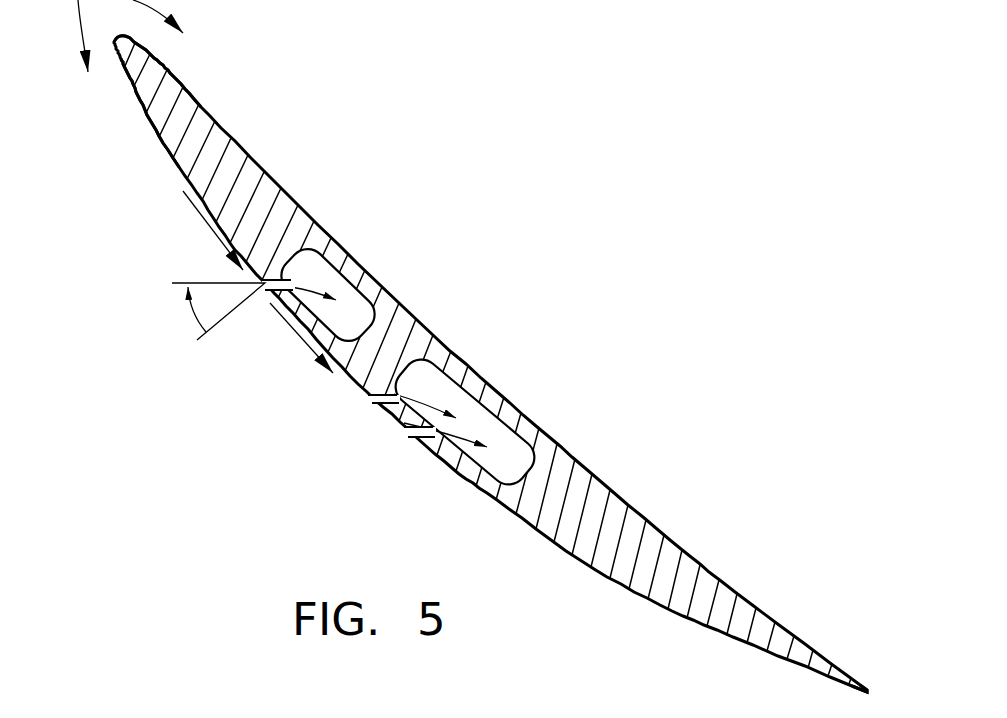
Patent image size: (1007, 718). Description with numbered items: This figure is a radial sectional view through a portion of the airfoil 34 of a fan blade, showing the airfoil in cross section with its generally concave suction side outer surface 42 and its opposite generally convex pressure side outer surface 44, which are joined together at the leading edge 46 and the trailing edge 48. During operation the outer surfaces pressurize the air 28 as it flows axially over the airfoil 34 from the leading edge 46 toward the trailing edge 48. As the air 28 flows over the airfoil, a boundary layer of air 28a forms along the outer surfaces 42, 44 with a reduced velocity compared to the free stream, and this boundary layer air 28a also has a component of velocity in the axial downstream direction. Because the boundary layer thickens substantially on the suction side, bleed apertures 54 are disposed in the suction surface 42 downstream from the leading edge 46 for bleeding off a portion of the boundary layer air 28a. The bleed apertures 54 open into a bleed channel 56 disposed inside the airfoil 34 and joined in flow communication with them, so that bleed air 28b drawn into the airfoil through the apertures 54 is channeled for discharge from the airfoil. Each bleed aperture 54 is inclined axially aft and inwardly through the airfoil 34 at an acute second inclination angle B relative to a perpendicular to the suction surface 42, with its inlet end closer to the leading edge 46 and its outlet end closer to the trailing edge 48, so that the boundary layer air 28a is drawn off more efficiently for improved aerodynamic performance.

The air 28 is at (82, 19).
The boundary layer air 28a is at (202, 220).
The bleed air 28b is at (418, 402).
The airfoil 34 is at (304, 205).
The suction side outer surface 42 is at (166, 146).
The pressure side outer surface 44 is at (193, 97).
The leading edge 46 is at (111, 38).
The trailing edge 48 is at (868, 690).
The bleed apertures 54 is at (262, 292).
The bleed channel 56 is at (354, 293).
The second inclination angle B is at (190, 325).